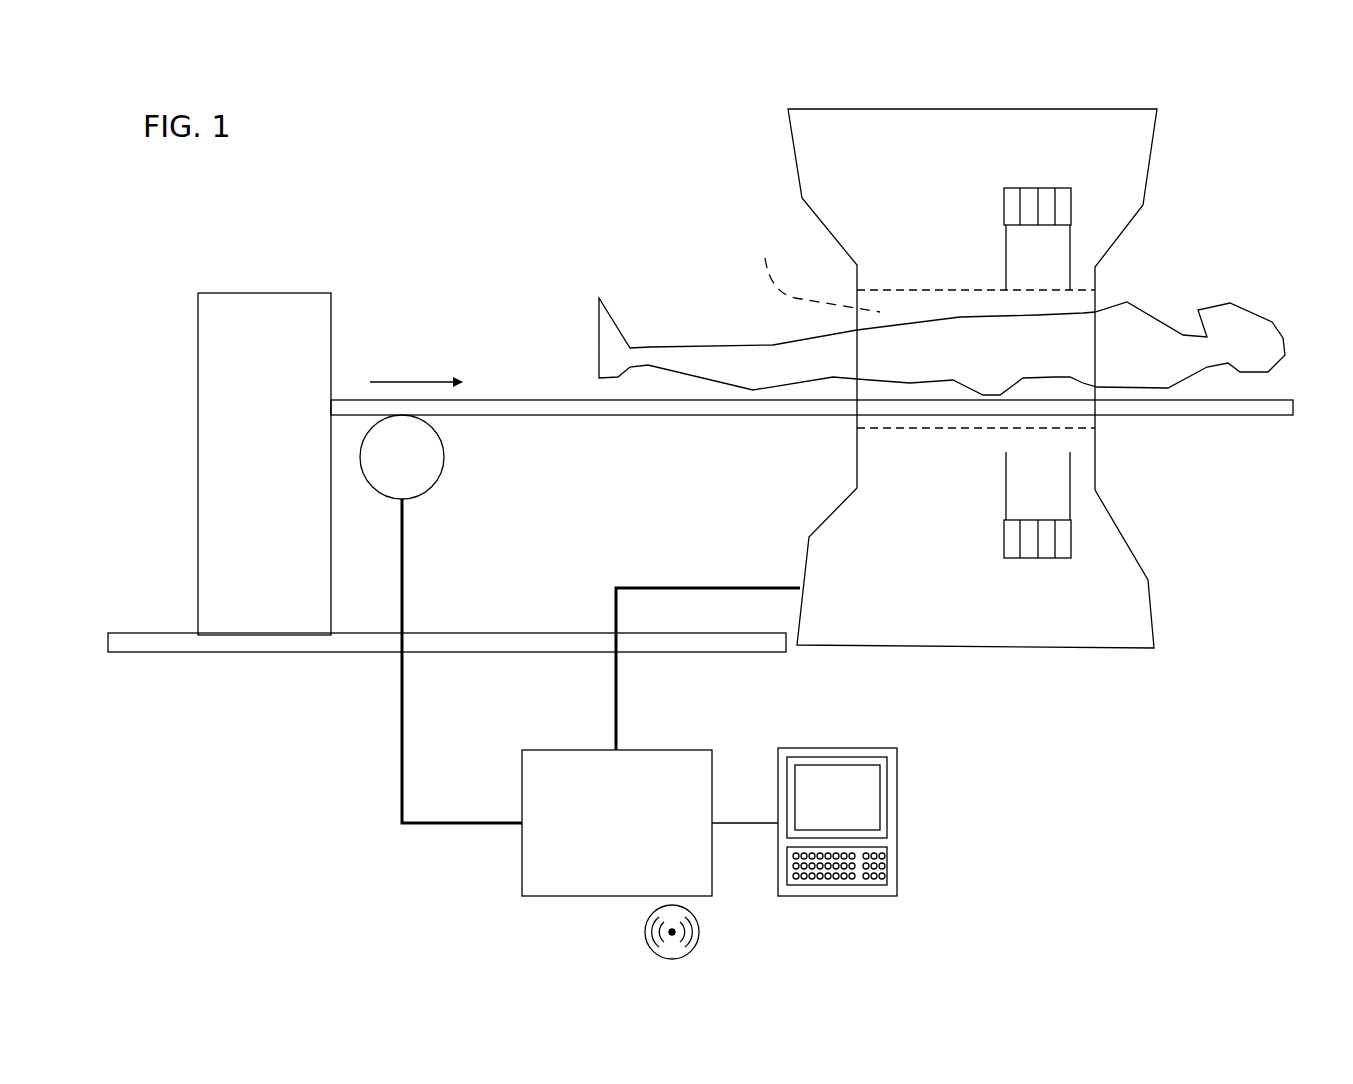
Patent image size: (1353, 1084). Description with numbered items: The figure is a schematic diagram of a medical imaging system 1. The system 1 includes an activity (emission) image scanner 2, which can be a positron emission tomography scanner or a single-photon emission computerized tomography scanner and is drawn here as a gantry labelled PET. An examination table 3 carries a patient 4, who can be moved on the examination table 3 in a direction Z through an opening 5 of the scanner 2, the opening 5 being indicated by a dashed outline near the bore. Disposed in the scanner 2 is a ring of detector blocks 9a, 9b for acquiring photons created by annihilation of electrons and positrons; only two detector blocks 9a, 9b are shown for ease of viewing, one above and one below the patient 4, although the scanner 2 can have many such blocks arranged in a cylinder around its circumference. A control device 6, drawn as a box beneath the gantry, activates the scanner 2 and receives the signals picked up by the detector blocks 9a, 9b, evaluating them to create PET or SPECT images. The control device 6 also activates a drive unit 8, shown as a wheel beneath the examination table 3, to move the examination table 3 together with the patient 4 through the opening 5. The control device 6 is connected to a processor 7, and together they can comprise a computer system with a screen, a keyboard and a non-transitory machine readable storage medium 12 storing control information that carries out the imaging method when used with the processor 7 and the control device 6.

The medical imaging system 1 is at (525, 143).
The activity (emission) image scanner 2 is at (1030, 108).
The examination table 3 is at (553, 397).
The patient 4 is at (1245, 307).
The opening 5 is at (816, 275).
The control device 6 is at (522, 862).
The processor 7 is at (835, 743).
The drive unit 8 is at (445, 457).
The detector block 9a is at (1065, 187).
The detector block 9b is at (1073, 538).
The non-transitory machine readable storage medium 12 is at (700, 932).